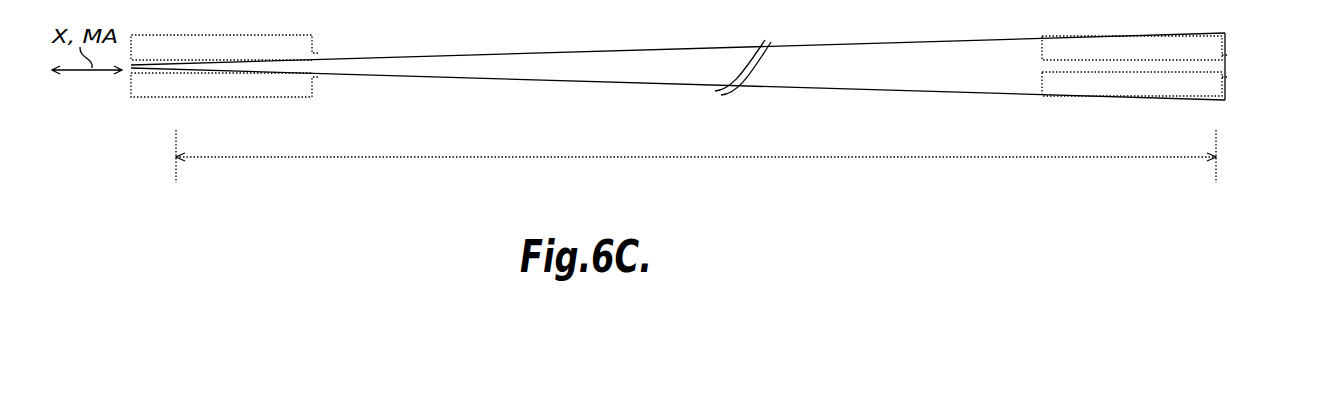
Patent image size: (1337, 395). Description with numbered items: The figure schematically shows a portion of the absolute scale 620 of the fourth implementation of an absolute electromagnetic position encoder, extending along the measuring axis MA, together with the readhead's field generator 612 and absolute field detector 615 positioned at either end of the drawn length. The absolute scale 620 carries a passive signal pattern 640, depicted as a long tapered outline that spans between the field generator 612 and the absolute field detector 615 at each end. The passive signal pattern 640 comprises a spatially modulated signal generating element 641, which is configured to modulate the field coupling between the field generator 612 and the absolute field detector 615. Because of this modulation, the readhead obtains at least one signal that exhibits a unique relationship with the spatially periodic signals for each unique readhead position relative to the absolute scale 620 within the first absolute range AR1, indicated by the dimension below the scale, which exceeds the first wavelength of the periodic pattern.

The field generator 612 is at (277, 35).
The absolute field detector 615 is at (277, 97).
The absolute scale 620 is at (1247, 66).
The passive signal pattern 640 is at (428, 55).
The spatially modulated signal generating element 641 is at (678, 66).
The first absolute range AR1 is at (677, 158).